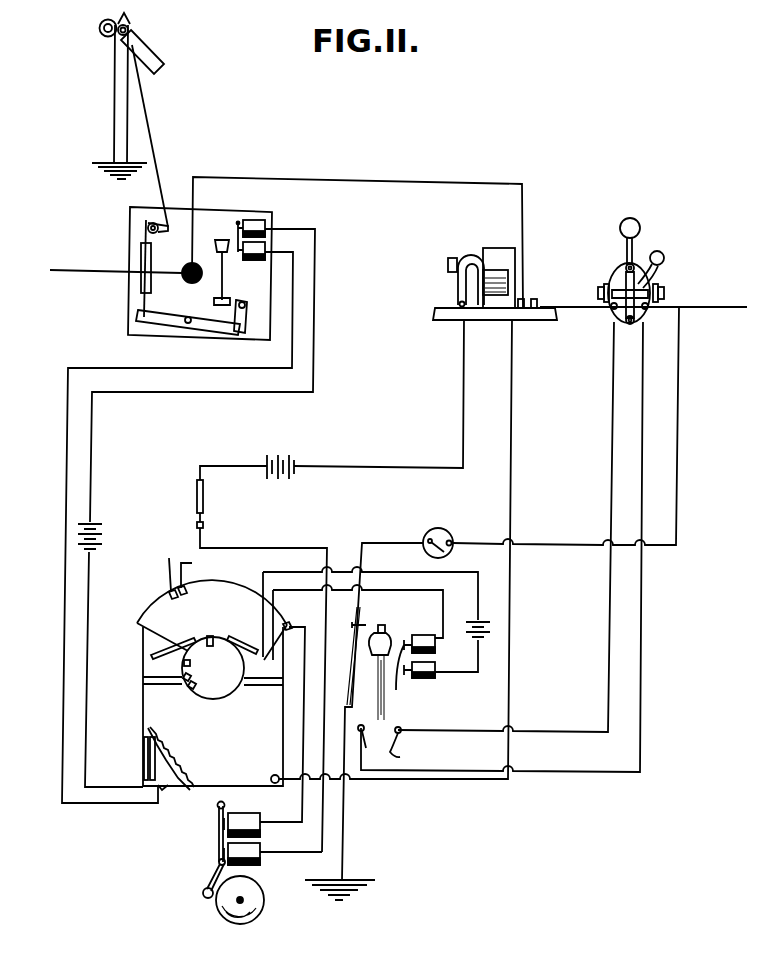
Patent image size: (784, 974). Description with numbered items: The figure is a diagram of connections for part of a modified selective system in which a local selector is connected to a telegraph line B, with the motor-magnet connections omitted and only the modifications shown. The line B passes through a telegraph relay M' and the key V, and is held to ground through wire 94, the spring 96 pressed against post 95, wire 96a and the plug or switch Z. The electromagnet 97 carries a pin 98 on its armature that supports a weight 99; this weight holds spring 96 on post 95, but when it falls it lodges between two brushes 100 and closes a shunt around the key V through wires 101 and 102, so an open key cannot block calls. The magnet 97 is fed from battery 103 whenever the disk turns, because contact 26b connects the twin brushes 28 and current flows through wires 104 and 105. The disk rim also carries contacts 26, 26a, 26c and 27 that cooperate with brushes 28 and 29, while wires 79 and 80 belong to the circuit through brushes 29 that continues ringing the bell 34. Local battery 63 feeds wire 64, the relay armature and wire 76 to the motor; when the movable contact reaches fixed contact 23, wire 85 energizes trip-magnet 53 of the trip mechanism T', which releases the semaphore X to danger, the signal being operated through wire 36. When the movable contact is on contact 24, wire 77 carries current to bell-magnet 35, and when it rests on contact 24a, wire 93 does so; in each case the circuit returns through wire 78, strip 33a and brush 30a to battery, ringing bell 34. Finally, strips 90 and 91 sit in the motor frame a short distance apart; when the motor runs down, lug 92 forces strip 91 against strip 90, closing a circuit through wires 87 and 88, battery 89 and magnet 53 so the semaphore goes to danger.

The semaphore X is at (128, 96).
The operating wire 36 is at (157, 128).
The line wire B is at (407, 186).
The trip mechanism T' is at (200, 273).
The trip-magnet 53 is at (268, 226).
The wire 87 is at (316, 260).
The wire 88 is at (66, 440).
The battery 89 is at (103, 537).
The telegraph relay M' is at (495, 297).
The key V is at (639, 271).
The wire 64 is at (423, 471).
The local battery 63 is at (257, 476).
The brush 30a is at (197, 492).
The metal strip 33a is at (203, 525).
The wire 76 is at (513, 446).
The wire 94 is at (680, 452).
The plug or switch Z is at (440, 534).
The wire 101 is at (608, 656).
The wire 102 is at (642, 738).
The brushes 100 is at (386, 755).
The wire 104 is at (414, 582).
The wire 105 is at (400, 603).
The battery 103 is at (476, 619).
The electromagnet 97 is at (437, 682).
The pin 98 is at (412, 680).
The weight 99 is at (396, 682).
The post 95 is at (360, 630).
The spring 96 is at (357, 673).
The wire 96a is at (344, 830).
The fixed contact 23 is at (169, 596).
The fixed contact 24 is at (187, 592).
The wire 85 is at (161, 569).
The wire 77 is at (196, 571).
The fixed contact 24a is at (290, 621).
The metal contact 26 is at (192, 684).
The contact 26b is at (210, 634).
The metal contact 26a is at (190, 663).
The contact 26c is at (185, 680).
The metal contact 27 is at (190, 689).
The brushes 29 is at (170, 648).
The twin brushes 28 is at (250, 644).
The wire 79 is at (147, 655).
The wire 80 is at (145, 663).
The strip 90 is at (143, 761).
The strip 91 is at (163, 790).
The lug 92 is at (187, 783).
The bell-magnet 35 is at (255, 820).
The wire 93 is at (275, 823).
The wire 78 is at (289, 858).
The bell 34 is at (255, 915).